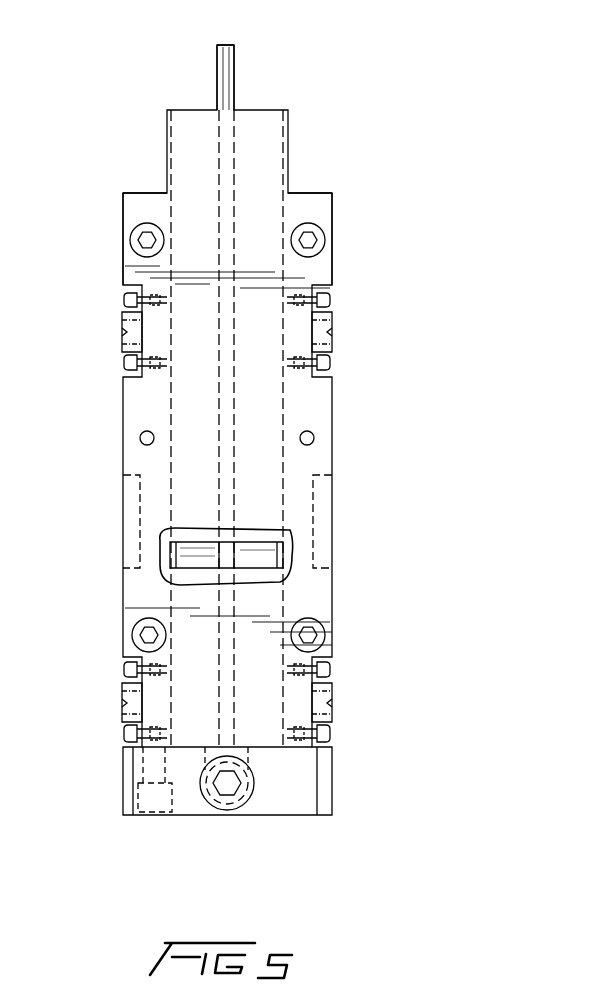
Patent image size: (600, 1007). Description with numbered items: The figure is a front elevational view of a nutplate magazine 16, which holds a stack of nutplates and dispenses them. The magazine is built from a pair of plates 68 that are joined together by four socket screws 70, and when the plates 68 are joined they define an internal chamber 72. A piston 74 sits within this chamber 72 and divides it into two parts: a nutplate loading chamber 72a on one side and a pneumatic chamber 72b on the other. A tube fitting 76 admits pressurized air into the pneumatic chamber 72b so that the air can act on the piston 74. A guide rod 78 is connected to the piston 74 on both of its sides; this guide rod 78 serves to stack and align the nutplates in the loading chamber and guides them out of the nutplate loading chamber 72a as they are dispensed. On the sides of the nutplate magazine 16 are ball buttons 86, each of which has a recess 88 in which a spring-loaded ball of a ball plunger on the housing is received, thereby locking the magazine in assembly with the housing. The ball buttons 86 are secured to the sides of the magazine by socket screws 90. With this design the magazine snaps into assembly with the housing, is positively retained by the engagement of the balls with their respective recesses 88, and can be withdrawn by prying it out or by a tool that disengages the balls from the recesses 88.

The nutplate magazine 16 is at (372, 87).
The guide rod 78 is at (235, 63).
The plates 68 is at (323, 212).
The socket screws 70 is at (325, 243).
The ball button 86 is at (122, 322).
The recess 88 is at (327, 330).
The chamber 72 is at (167, 395).
The nutplate loading chamber 72a is at (275, 418).
The pneumatic chamber 72b is at (270, 695).
The piston 74 is at (270, 558).
The socket screws 90 is at (330, 732).
The tube fitting 76 is at (227, 797).